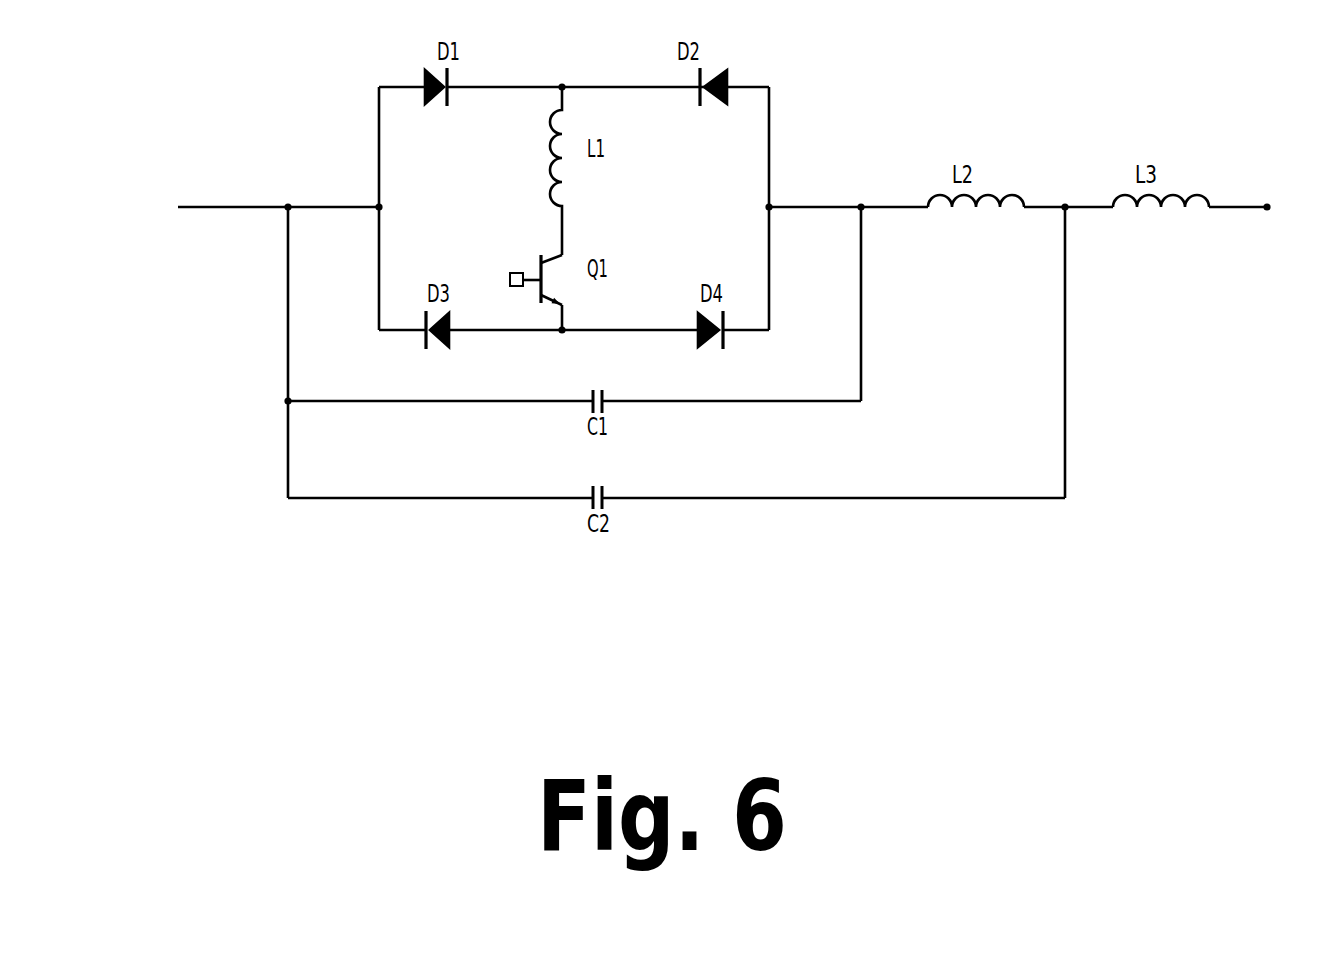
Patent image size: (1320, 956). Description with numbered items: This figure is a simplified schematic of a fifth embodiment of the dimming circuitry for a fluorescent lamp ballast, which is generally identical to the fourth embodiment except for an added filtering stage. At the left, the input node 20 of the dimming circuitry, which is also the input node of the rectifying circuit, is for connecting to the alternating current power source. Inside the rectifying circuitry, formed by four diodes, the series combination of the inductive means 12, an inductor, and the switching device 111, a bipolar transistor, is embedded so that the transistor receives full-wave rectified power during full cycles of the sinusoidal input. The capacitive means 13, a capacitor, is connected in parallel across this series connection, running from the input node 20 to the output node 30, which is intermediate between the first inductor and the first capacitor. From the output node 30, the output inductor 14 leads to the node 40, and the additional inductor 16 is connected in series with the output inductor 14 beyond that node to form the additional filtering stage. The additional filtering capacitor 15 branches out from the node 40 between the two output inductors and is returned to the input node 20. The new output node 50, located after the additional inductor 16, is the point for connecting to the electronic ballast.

The input node 20 is at (278, 187).
The output node 30 is at (848, 188).
The node between the output inductors 40 is at (1068, 188).
The new output node 50 is at (1257, 204).
The inductive means 12 is at (540, 171).
The switching device 111 is at (508, 267).
The capacitive means 13 is at (574, 388).
The output inductor 14 is at (976, 221).
The additional filtering capacitor 15 is at (676, 485).
The additional inductor 16 is at (1161, 221).